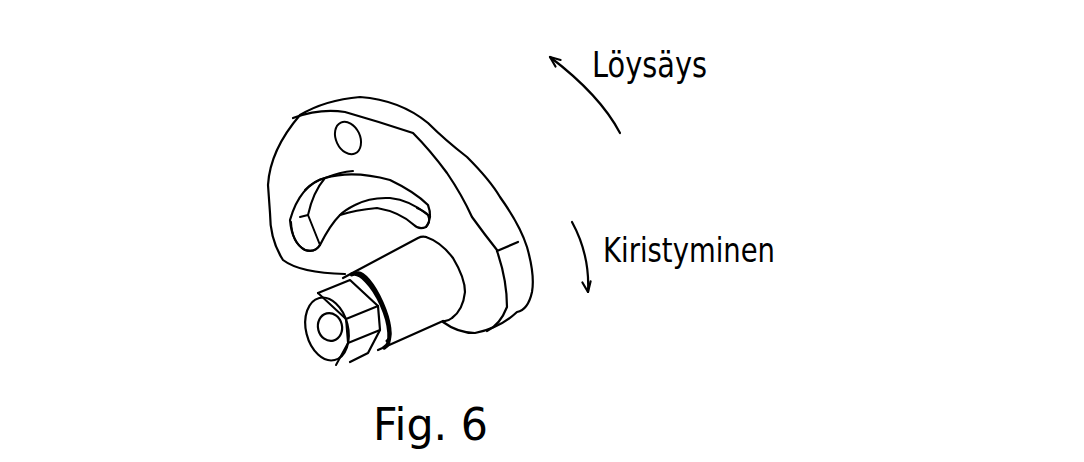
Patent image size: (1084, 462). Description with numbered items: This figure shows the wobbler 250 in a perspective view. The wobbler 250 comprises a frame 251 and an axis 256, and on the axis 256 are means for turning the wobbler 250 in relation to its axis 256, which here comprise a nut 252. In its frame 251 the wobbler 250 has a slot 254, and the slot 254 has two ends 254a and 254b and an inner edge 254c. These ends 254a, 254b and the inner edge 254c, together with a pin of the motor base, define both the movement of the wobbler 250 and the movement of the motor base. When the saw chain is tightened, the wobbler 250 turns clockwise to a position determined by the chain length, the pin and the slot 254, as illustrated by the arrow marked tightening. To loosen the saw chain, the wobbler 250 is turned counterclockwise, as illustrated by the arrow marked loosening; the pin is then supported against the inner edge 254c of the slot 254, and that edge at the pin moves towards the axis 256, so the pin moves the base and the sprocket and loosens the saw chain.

The wobbler 250 is at (238, 93).
The frame 251 is at (463, 230).
The nut 252 is at (305, 315).
The slot 254 is at (345, 188).
The end of slot 254a is at (424, 205).
The end of slot 254b is at (291, 240).
The inner edge of slot 254c is at (330, 173).
The axis 256 is at (420, 297).